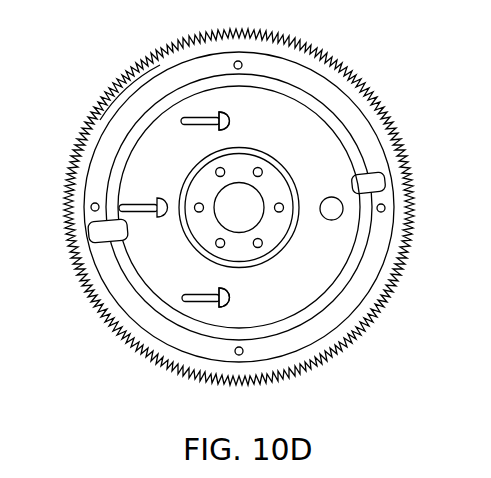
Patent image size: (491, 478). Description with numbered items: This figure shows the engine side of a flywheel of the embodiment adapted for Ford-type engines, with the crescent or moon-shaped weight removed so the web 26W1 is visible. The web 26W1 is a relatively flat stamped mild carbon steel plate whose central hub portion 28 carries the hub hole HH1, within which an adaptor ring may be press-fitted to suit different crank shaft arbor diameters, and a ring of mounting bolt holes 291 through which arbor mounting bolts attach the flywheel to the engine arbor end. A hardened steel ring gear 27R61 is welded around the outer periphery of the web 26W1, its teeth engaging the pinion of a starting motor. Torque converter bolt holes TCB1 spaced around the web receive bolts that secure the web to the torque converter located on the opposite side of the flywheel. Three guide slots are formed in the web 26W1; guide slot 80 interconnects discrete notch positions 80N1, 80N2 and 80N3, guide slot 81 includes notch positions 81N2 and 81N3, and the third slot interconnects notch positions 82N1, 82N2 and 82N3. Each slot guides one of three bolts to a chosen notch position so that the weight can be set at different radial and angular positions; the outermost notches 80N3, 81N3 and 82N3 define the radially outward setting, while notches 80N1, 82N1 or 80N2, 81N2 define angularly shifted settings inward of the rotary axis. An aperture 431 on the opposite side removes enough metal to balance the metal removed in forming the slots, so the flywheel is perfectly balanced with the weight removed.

The guide slot 80 is at (246, 69).
The notch position 80N1 is at (223, 113).
The notch position 80N2 is at (228, 122).
The notch position 80N3 is at (130, 96).
The guide slot 81 is at (107, 236).
The notch position 81N2 is at (124, 270).
The notch position 81N3 is at (118, 207).
The notch position 82N1 is at (226, 289).
The notch position 82N2 is at (229, 303).
The notch position 82N3 is at (217, 293).
The torque converter bolt holes TCB1 is at (382, 204).
The mounting bolt holes 291 is at (222, 169).
The hub hole HH1 is at (242, 206).
The hub portion 28 is at (270, 229).
The aperture 431 is at (333, 210).
The web portion 26W1 is at (315, 270).
The ring gear 27R61 is at (333, 361).